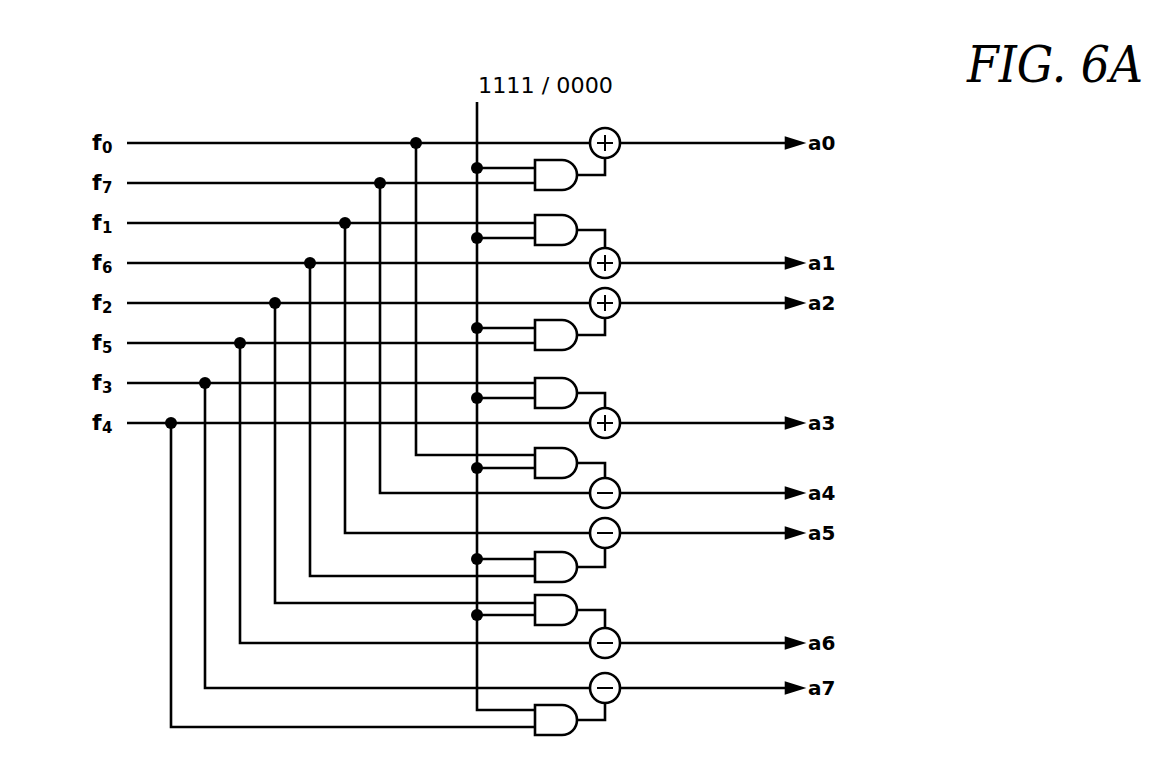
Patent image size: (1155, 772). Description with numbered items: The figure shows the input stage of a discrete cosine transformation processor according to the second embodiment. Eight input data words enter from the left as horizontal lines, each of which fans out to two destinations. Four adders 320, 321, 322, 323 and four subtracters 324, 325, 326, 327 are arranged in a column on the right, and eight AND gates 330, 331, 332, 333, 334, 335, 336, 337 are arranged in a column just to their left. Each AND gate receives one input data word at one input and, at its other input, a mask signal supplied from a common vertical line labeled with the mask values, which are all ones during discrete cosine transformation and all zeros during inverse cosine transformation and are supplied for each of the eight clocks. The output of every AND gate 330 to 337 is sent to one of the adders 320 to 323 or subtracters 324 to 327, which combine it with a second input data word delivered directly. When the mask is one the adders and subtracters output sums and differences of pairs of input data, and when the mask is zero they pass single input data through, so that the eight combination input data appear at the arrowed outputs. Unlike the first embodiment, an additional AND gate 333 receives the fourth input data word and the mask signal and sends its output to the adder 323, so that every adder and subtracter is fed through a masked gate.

The adder 320 is at (613, 132).
The adder 321 is at (614, 252).
The adder 322 is at (614, 314).
The adder 323 is at (614, 412).
The subtracter 324 is at (614, 482).
The subtracter 325 is at (614, 544).
The subtracter 326 is at (614, 653).
The subtracter 327 is at (614, 698).
The AND gate 330 is at (572, 188).
The AND gate 331 is at (572, 218).
The AND gate 332 is at (572, 348).
The AND gate 333 is at (572, 380).
The AND gate 334 is at (572, 450).
The AND gate 335 is at (572, 580).
The AND gate 336 is at (572, 598).
The AND gate 337 is at (572, 728).